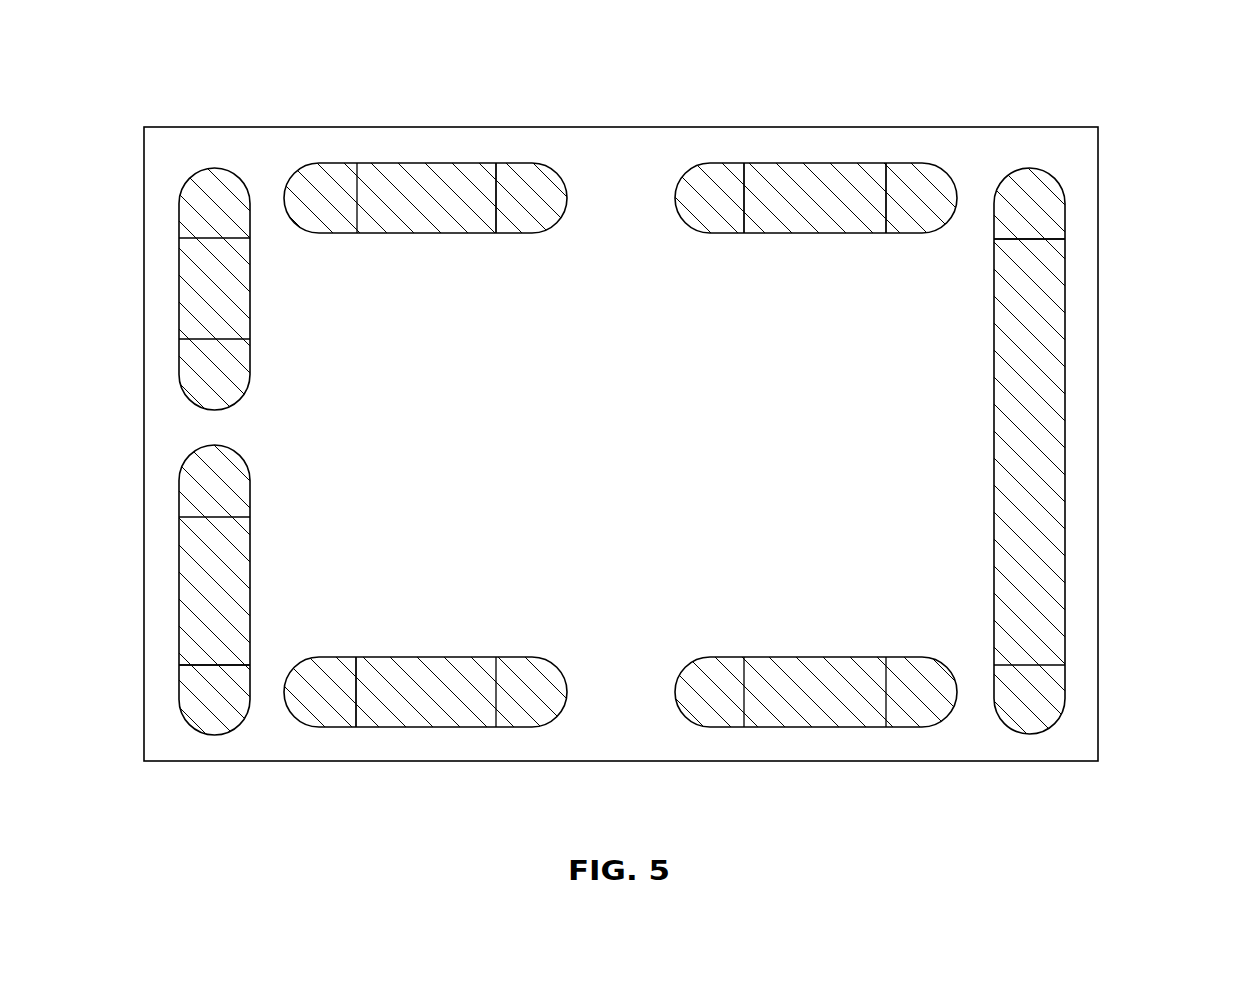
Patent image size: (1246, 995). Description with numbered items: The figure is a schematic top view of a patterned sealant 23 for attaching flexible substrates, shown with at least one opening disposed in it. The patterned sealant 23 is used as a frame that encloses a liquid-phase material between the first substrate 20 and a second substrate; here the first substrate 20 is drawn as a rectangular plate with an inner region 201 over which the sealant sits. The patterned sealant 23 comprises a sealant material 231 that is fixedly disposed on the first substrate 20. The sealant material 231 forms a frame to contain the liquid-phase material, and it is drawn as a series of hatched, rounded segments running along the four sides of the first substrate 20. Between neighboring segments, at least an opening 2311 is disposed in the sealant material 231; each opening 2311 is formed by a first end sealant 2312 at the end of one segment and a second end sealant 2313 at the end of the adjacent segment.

The first substrate 20 is at (1100, 320).
The inner region of frame 201 is at (1083, 210).
The patterned sealant 23 is at (1086, 403).
The sealant material 231 is at (420, 190).
The opening 2311 is at (300, 150).
The first end sealant 2312 is at (550, 197).
The second end sealant 2313 is at (700, 197).